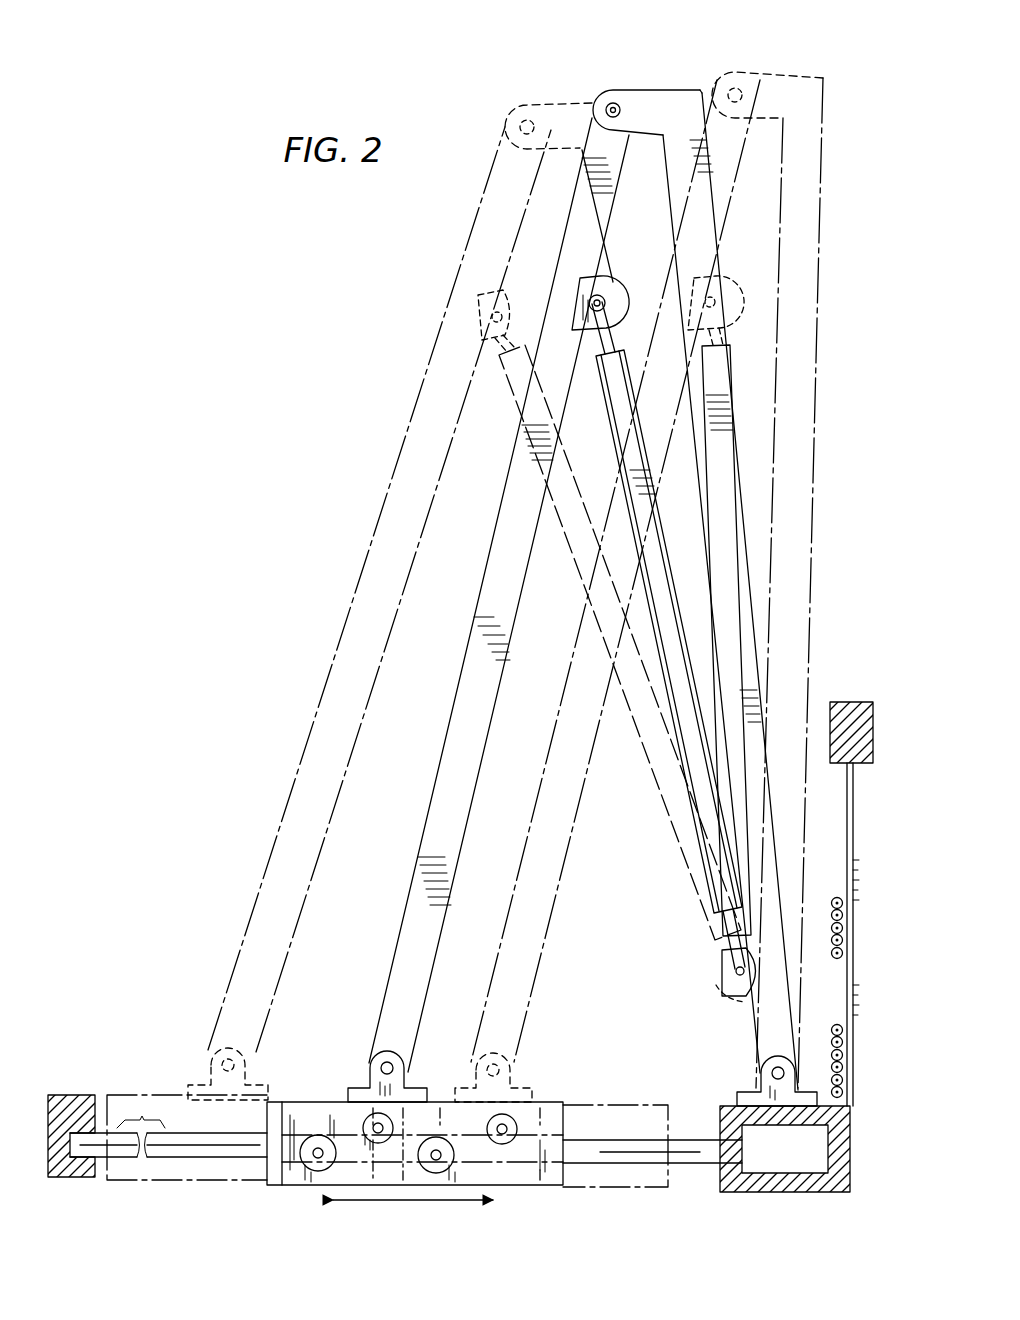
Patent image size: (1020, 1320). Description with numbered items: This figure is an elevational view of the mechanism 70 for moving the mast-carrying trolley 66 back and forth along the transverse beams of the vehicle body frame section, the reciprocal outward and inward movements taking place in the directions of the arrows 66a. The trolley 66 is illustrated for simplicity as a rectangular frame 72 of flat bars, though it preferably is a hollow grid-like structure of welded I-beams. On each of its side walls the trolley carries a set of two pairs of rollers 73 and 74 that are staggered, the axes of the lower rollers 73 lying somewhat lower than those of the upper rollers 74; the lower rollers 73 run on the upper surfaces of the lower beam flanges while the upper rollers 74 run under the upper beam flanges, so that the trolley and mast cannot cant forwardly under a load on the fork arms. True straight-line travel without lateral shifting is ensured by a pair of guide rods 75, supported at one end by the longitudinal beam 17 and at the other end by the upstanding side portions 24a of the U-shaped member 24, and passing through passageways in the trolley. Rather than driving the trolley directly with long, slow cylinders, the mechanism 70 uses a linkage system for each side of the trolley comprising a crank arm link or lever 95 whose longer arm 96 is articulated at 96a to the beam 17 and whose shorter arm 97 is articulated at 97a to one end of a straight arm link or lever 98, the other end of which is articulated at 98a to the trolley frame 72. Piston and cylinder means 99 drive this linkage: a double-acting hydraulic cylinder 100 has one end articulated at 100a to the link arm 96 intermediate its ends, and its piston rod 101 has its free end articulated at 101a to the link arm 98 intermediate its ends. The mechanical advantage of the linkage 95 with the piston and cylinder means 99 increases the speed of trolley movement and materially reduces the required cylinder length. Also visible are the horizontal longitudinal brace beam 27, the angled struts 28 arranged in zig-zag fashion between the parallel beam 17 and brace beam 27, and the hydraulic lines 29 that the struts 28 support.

The longitudinal beam 17 is at (848, 1153).
The U-shaped member 24 is at (76, 1178).
The upstanding side portions 24a is at (76, 1095).
The horizontal longitudinal brace beam 27 is at (866, 702).
The angled struts 28 is at (853, 809).
The hydraulic lines 29 is at (848, 977).
The trolley 66 is at (556, 1190).
The arrows 66a is at (400, 1202).
The mechanism 70 is at (634, 858).
The rectangular frame 72 is at (560, 1103).
The lower rollers 73 is at (315, 1171).
The upper rollers 74 is at (374, 1122).
The guide rods 75 is at (697, 1170).
The crank arm link 95 is at (700, 87).
The longer arm 96 is at (710, 187).
The articulation of longer arm 96a is at (768, 1073).
The shorter arm 97 is at (655, 89).
The articulation of shorter arm 97a is at (617, 92).
The straight arm link 98 is at (492, 538).
The articulation to trolley frame 98a is at (383, 1058).
The piston and cylinder means 99 is at (678, 600).
The double-acting hydraulic cylinder 100 is at (702, 752).
The cylinder articulation 100a is at (730, 968).
The piston rod 101 is at (592, 345).
The piston rod articulation 101a is at (592, 282).